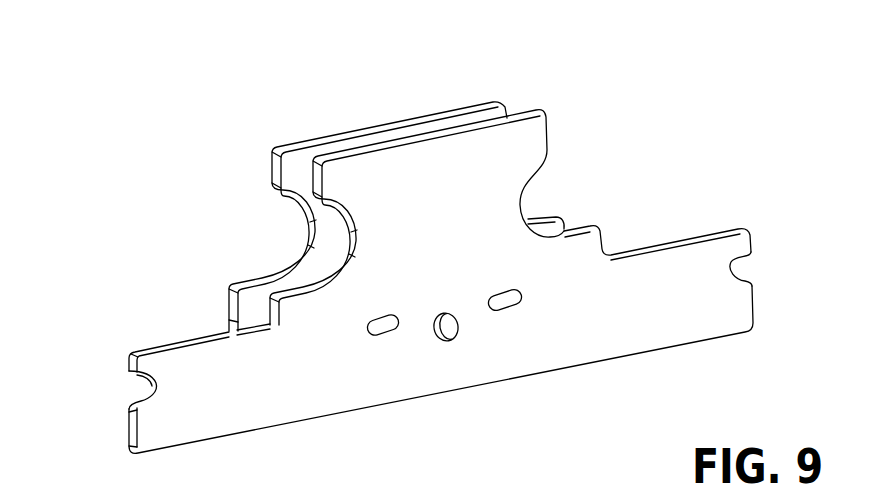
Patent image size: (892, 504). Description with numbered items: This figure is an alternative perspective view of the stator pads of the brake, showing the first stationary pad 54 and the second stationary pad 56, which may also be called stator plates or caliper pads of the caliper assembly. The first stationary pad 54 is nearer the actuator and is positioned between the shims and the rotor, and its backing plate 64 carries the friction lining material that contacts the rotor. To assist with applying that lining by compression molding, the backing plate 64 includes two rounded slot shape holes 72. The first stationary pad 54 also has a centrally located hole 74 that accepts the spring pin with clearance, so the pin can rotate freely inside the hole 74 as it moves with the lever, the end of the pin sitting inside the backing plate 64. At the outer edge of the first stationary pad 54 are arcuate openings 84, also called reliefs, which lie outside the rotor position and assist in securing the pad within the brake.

The second stationary pad 56 is at (255, 130).
The first stationary pad 54 is at (546, 105).
The backing plate 64 is at (660, 239).
The arcuate openings 84 is at (152, 382).
The hole 74 is at (447, 337).
The rounded slot shape holes 72 is at (512, 302).